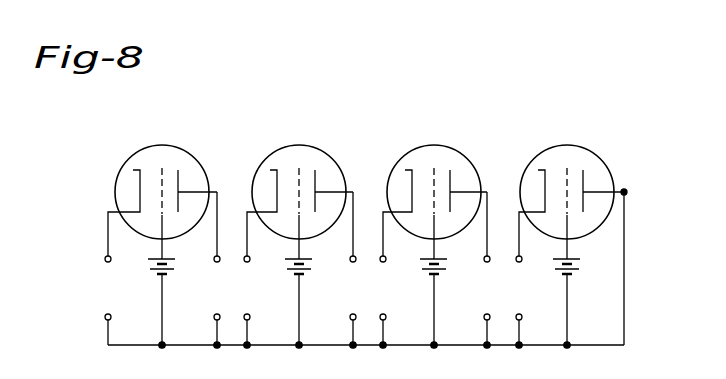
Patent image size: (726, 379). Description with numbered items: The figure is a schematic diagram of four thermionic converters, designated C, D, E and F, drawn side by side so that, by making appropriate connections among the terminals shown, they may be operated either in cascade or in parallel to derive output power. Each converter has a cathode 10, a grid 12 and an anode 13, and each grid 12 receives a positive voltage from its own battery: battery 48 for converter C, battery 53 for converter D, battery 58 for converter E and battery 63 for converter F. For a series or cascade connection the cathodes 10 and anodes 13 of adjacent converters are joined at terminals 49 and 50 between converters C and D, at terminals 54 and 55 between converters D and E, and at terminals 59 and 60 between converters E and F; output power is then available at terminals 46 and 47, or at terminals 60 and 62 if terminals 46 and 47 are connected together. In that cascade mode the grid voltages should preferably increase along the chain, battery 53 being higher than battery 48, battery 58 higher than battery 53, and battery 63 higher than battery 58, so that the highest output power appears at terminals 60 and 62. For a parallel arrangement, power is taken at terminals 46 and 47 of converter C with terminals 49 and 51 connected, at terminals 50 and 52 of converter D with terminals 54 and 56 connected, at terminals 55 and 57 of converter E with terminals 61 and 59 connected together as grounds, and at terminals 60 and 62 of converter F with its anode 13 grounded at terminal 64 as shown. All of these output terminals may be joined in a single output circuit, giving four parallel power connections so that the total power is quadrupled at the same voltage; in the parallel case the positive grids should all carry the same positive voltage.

The cathode 10 is at (140, 180).
The grid 12 is at (162, 215).
The anode 13 is at (178, 180).
The terminal 46 is at (105, 258).
The terminal 47 is at (105, 317).
The battery 48 is at (151, 270).
The terminal 49 is at (217, 262).
The terminal 50 is at (250, 258).
The terminal 51 is at (214, 317).
The terminal 52 is at (244, 317).
The battery 53 is at (290, 271).
The terminal 54 is at (353, 262).
The terminal 55 is at (383, 262).
The terminal 56 is at (350, 317).
The terminal 57 is at (385, 315).
The battery 58 is at (438, 273).
The terminal 59 is at (487, 262).
The terminal 60 is at (522, 259).
The terminal 61 is at (484, 317).
The terminal 62 is at (516, 317).
The battery 63 is at (575, 275).
The terminal 64 is at (626, 190).